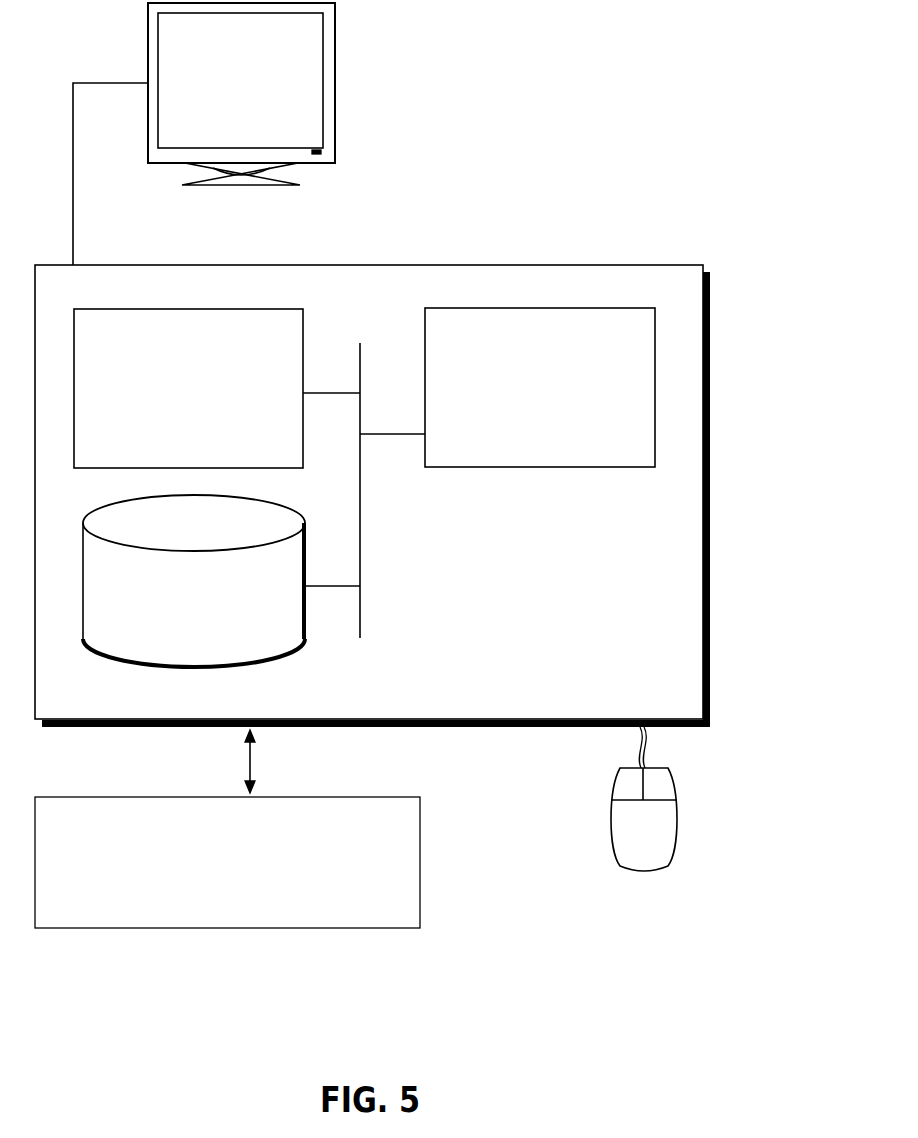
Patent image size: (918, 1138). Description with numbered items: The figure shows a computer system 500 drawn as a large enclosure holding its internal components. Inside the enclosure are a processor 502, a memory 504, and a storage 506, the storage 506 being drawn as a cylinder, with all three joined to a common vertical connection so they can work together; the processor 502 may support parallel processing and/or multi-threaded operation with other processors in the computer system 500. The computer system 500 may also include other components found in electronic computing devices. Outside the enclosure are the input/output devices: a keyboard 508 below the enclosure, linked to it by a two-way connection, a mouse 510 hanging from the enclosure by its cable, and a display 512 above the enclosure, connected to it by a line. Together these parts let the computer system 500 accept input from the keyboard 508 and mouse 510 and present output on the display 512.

The computer system 500 is at (413, 233).
The processor 502 is at (540, 387).
The memory 504 is at (188, 388).
The storage 506 is at (194, 581).
The keyboard 508 is at (227, 844).
The mouse 510 is at (644, 799).
The display 512 is at (204, 134).